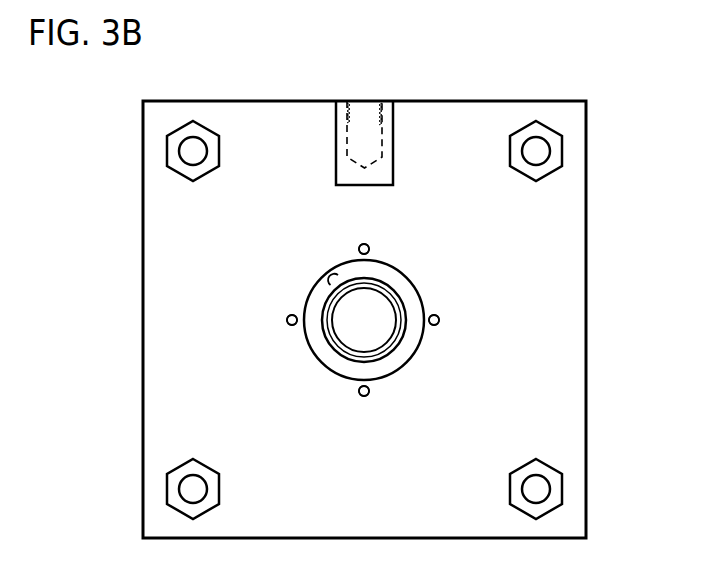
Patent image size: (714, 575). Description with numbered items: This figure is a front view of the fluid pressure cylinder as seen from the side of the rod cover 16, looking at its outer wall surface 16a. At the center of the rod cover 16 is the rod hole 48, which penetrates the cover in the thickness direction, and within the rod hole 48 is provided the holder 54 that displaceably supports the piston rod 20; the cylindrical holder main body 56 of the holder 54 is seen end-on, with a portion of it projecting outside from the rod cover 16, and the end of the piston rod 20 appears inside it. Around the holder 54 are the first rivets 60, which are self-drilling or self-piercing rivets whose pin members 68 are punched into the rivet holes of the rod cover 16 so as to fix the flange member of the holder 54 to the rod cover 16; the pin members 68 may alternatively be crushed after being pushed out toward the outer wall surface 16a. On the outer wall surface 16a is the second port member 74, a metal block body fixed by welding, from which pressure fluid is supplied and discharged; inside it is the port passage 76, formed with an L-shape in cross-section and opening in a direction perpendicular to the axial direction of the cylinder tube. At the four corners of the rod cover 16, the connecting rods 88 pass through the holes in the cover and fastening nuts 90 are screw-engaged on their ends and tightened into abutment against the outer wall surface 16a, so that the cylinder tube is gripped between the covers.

The rod cover 16 is at (589, 272).
The outer wall surface 16a is at (172, 360).
The piston rod 20 is at (367, 326).
The rod hole 48 is at (330, 280).
The holder 54 is at (313, 356).
The holder main body 56 is at (398, 280).
The first rivets 60 is at (366, 243).
The pin member 68 is at (363, 320).
The second port member 74 is at (398, 138).
The port passage 76 is at (361, 120).
The connecting rods 88 is at (200, 150).
The fastening nuts 90 is at (185, 167).